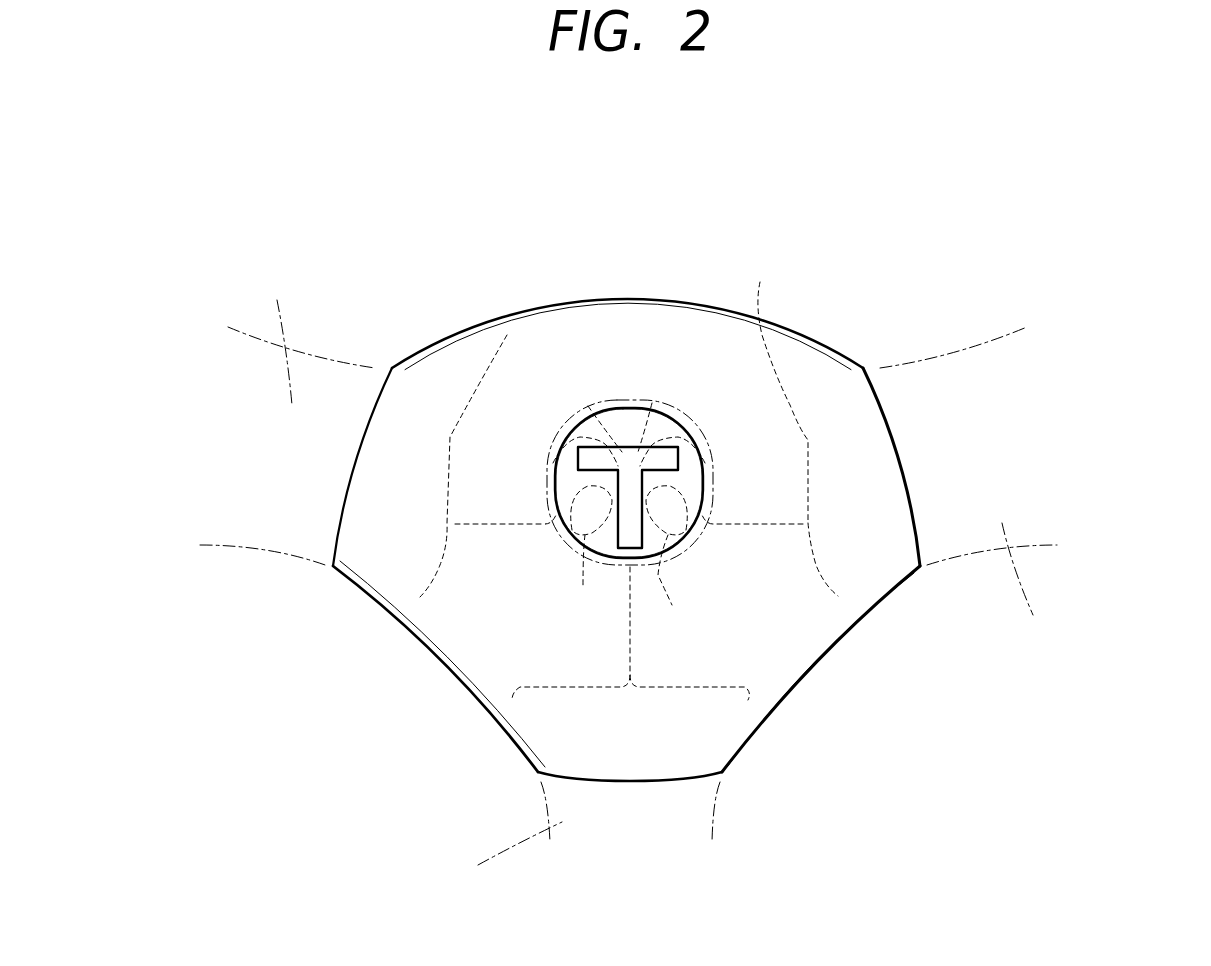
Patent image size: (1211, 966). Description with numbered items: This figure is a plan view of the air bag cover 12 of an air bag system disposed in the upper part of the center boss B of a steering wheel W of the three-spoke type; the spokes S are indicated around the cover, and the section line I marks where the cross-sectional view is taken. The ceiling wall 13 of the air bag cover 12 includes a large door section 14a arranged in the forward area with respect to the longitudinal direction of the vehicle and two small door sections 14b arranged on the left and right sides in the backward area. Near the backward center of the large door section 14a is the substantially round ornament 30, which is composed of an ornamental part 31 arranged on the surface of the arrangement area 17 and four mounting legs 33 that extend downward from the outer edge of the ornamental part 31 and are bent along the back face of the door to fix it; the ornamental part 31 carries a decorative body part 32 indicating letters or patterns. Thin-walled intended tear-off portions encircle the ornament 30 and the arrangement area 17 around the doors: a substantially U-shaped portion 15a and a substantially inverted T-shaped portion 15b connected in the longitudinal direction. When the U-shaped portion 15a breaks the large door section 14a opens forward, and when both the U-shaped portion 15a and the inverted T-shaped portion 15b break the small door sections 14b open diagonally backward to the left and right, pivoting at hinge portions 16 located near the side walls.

The steering wheel W is at (417, 207).
The spokes S is at (660, 577).
The center boss B is at (770, 830).
The section line I- I is at (630, 170).
The air bag cover 12 is at (817, 301).
The ceiling wall 13 is at (860, 560).
The large door section 14a is at (505, 387).
The small door sections 14b is at (508, 642).
The U-shaped portion 15a is at (790, 432).
The inverted T-shaped portion 15b is at (638, 645).
The hinge portions 16 is at (718, 332).
The arrangement area 17 is at (625, 406).
The ornament 30 is at (638, 413).
The ornamental part 31 is at (688, 474).
The decorative body part 32 is at (574, 460).
The mounting legs 33 is at (560, 405).